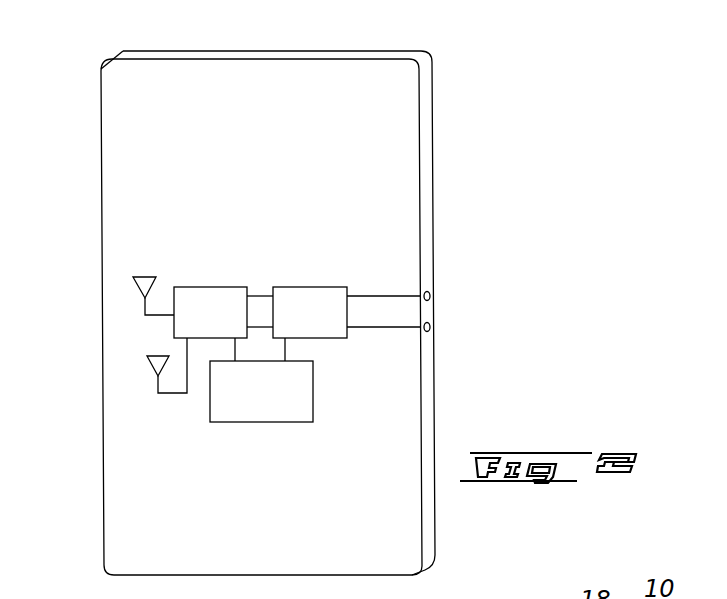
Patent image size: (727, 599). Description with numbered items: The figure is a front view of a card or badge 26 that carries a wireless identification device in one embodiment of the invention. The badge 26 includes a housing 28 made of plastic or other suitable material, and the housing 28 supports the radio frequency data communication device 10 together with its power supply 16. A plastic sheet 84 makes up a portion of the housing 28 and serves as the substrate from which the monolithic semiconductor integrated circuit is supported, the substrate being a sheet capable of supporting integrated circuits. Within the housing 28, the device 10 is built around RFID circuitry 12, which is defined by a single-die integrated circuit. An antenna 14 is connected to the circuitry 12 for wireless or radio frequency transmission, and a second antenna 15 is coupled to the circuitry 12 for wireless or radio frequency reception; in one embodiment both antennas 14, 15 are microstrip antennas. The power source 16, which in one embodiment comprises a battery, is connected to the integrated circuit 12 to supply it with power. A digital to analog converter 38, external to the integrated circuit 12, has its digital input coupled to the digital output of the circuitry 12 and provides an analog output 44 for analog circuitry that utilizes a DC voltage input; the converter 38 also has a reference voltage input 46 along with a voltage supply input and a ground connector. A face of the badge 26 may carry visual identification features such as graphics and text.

The radio frequency data communication device 10 is at (320, 442).
The RFID circuitry 12 is at (211, 287).
The antenna 14 is at (152, 372).
The antenna 15 is at (150, 276).
The power source 16 is at (243, 425).
The card or badge 26 is at (380, 200).
The housing 28 is at (143, 507).
The digital to analog converter 38 is at (326, 287).
The analog output 44 is at (433, 294).
The reference voltage input 46 is at (434, 328).
The plastic sheet 84 is at (185, 55).